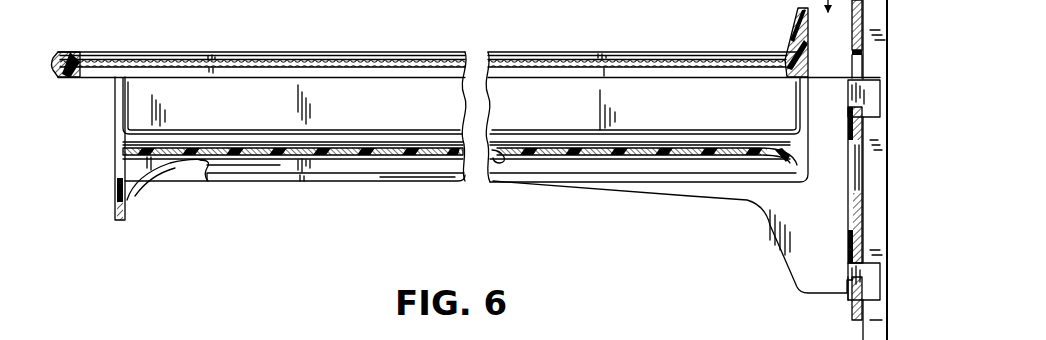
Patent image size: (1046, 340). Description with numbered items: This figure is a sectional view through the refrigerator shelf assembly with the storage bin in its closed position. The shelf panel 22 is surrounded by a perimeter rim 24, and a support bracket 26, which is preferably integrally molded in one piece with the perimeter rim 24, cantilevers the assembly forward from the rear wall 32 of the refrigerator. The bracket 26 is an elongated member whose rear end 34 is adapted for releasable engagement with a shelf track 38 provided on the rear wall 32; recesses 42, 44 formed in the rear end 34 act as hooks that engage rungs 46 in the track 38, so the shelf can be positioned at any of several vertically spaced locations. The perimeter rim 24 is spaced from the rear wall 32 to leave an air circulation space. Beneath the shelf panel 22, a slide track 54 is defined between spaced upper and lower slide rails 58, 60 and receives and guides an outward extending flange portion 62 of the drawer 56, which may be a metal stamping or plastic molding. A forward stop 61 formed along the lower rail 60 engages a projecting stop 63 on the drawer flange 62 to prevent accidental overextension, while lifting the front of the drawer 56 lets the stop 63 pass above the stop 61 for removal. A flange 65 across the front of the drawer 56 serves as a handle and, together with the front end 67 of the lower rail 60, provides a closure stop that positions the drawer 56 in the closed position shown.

The shelf panel 22 is at (247, 59).
The perimeter rim 24 is at (72, 53).
The support bracket 26 is at (409, 233).
The rear wall 32 is at (887, 207).
The rear end 34 is at (758, 241).
The shelf track 38 is at (874, 337).
The recess 42 is at (850, 107).
The recess 44 is at (846, 298).
The rung 46 is at (853, 10).
The slide track 54 is at (308, 163).
The storage bin or drawer 56 is at (270, 162).
The upper slide rail 58 is at (402, 137).
The lower slide rail 60 is at (445, 180).
The forward stop 61 is at (198, 168).
The flange portion 62 is at (358, 160).
The projecting stop 63 is at (500, 160).
The flange 65 is at (118, 168).
The front end 67 is at (138, 186).